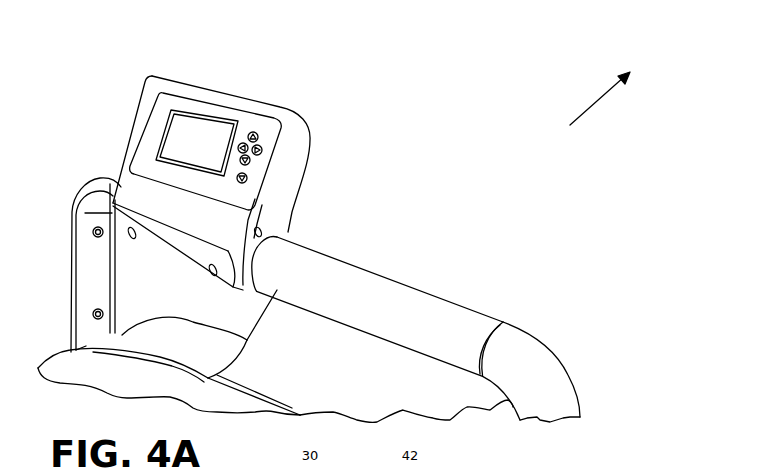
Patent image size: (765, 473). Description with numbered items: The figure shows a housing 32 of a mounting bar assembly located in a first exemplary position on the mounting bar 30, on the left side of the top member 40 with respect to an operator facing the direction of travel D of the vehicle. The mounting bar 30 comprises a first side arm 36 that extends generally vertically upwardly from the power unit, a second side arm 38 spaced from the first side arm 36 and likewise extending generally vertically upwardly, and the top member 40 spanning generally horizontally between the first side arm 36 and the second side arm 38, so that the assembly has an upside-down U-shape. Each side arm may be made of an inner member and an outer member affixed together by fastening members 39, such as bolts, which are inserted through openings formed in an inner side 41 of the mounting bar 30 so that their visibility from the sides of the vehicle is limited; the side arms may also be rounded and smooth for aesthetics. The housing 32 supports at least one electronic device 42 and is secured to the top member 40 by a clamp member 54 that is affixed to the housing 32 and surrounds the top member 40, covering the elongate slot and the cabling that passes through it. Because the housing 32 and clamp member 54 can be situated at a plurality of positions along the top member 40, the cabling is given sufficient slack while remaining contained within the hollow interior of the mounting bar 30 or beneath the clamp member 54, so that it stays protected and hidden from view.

The mounting bar 30 is at (66, 82).
The housing 32 is at (290, 163).
The first side arm 36 is at (67, 195).
The second side arm 38 is at (575, 367).
The fastening members 39 is at (104, 236).
The top member 40 is at (430, 313).
The inner side 41 is at (210, 290).
The electronic device 42 is at (177, 135).
The clamp member 54 is at (183, 252).
The direction of travel D is at (592, 108).